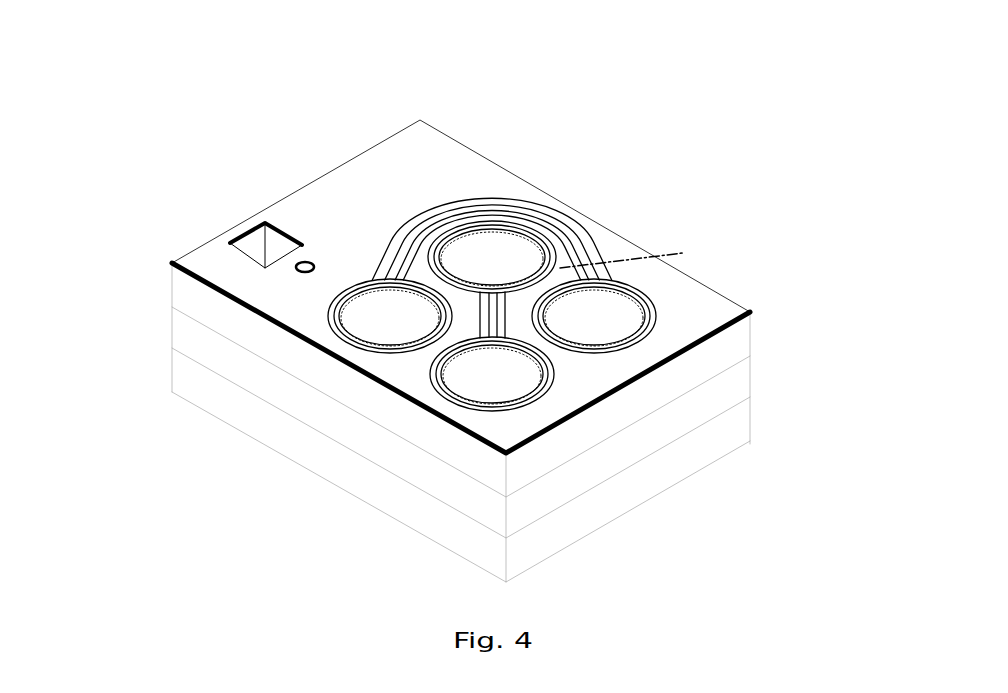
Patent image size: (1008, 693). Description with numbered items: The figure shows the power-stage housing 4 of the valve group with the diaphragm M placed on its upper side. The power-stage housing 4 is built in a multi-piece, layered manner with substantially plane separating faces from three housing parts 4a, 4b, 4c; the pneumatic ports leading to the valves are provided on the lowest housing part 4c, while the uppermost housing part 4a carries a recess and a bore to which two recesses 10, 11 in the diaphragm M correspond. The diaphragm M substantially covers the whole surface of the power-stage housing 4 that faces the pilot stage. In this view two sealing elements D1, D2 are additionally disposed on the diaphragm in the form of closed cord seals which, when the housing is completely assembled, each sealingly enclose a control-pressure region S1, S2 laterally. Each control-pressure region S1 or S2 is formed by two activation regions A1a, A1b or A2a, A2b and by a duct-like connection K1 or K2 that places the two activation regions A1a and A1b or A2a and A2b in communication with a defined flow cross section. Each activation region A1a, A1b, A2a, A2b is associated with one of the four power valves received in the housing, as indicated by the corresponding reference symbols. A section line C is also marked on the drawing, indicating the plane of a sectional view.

The power-stage housing 4 is at (458, 317).
The uppermost housing part 4a is at (732, 345).
The housing part 4b is at (732, 389).
The lowest housing part 4c is at (735, 434).
The recess 10 is at (233, 242).
The recess 11 is at (307, 265).
The diaphragm M is at (715, 312).
The control-pressure region S1 is at (548, 316).
The control-pressure region S2 is at (529, 222).
The activation region A1a is at (512, 377).
The activation region A1b is at (472, 250).
The activation region A2a is at (619, 318).
The activation region A2b is at (376, 312).
The duct-like connection K1 is at (488, 293).
The duct-like connection K2 is at (578, 245).
The sealing element D1 is at (475, 403).
The sealing element D2 is at (350, 337).
The section line C- C is at (613, 213).